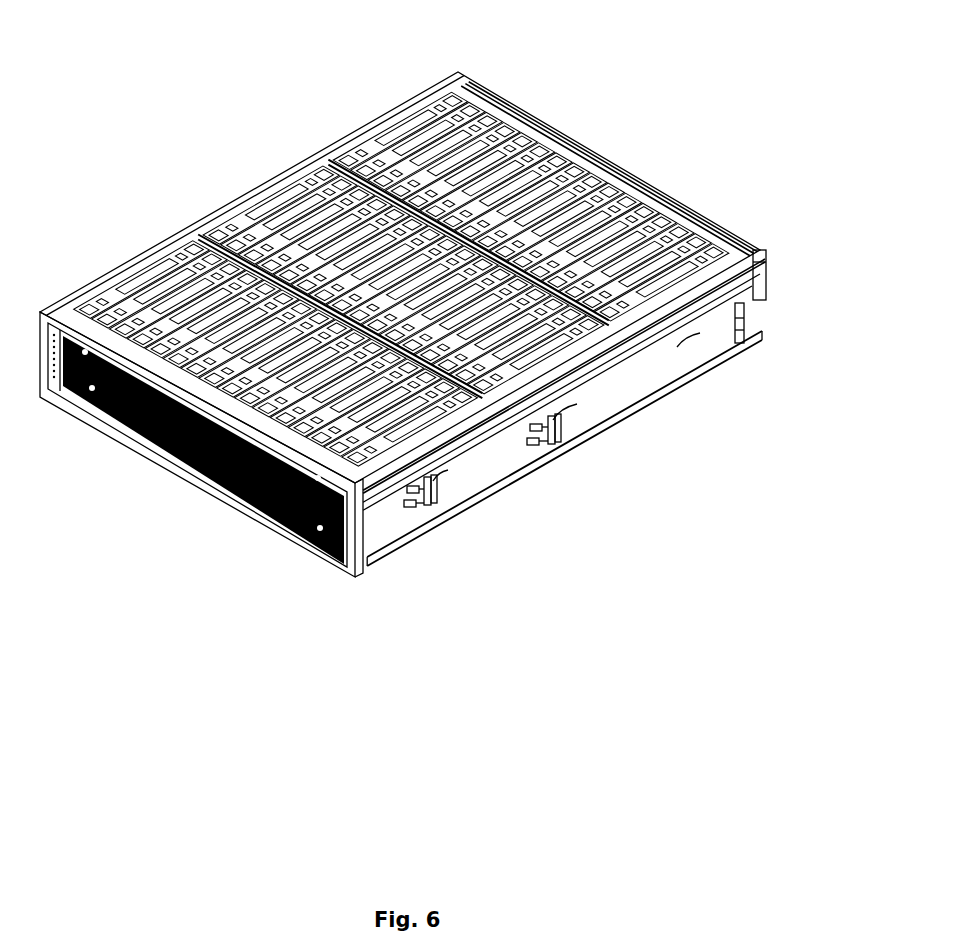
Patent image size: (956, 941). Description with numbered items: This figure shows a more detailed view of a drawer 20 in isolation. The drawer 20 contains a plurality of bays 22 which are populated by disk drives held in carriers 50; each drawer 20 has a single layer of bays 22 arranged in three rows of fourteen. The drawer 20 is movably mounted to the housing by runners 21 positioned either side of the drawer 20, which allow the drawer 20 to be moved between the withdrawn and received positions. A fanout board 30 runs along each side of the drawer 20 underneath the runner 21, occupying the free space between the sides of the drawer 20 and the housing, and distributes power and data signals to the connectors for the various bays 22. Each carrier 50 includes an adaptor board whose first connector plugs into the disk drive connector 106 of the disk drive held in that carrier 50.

The drawer 20 is at (251, 54).
The runner 21 is at (728, 285).
The bay 22 is at (540, 150).
The fanout board 30 is at (607, 402).
The carrier 50 is at (522, 135).
The disk drive connector 106 is at (601, 247).